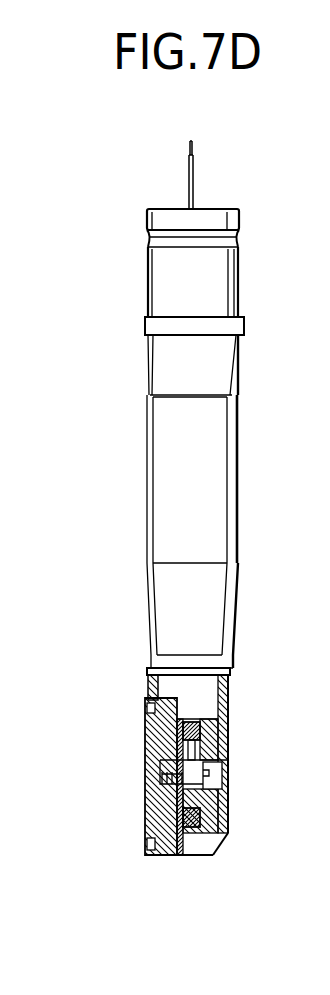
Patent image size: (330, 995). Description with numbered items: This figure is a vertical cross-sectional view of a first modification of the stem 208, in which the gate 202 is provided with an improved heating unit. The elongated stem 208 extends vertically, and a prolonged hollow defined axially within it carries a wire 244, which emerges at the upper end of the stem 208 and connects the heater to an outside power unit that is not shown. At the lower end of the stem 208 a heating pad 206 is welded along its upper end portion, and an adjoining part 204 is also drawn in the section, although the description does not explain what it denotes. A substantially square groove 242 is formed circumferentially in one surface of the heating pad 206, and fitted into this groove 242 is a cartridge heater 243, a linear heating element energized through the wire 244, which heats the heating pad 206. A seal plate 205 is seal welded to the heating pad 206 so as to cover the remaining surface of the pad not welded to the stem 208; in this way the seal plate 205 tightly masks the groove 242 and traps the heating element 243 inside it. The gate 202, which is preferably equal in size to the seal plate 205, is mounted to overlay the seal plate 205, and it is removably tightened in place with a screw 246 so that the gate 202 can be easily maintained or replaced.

The wire 244 is at (196, 177).
The stem 208 is at (213, 448).
The housing top wall 204 is at (146, 710).
The gate 202 is at (158, 803).
The cartridge heater 243 is at (217, 735).
The screw 246 is at (222, 775).
The groove 242 is at (205, 826).
The heating pad 206 is at (208, 850).
The seal plate 205 is at (188, 857).